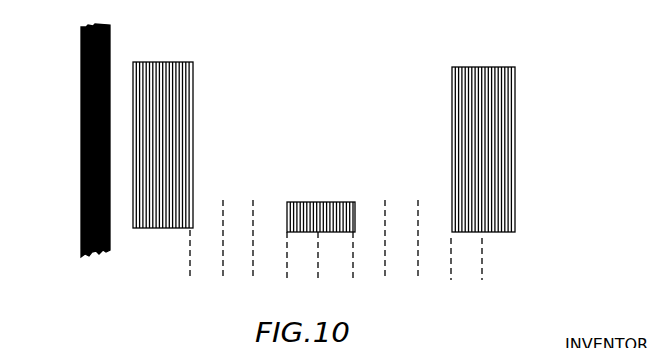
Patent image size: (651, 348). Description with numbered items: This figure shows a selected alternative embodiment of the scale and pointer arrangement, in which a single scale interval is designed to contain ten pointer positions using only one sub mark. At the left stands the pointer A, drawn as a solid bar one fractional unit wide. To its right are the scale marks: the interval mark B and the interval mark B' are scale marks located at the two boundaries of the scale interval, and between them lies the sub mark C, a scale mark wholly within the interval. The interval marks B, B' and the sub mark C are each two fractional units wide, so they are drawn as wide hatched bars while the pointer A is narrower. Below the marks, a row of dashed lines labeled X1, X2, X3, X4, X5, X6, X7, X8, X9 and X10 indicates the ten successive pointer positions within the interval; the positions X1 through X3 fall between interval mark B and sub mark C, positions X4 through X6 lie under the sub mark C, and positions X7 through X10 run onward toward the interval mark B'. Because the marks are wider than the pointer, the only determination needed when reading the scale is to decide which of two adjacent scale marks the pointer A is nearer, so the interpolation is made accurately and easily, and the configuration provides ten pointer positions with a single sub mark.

The pointer A is at (82, 74).
The interval mark B is at (175, 145).
The interval mark B' is at (500, 149).
The sub mark C is at (323, 207).
The position X1 is at (190, 266).
The position X2 is at (223, 251).
The position X3 is at (253, 251).
The position X4 is at (287, 267).
The position X5 is at (318, 267).
The position X6 is at (353, 267).
The position X7 is at (385, 251).
The position X8 is at (418, 251).
The position X9 is at (451, 270).
The position X10 is at (487, 270).